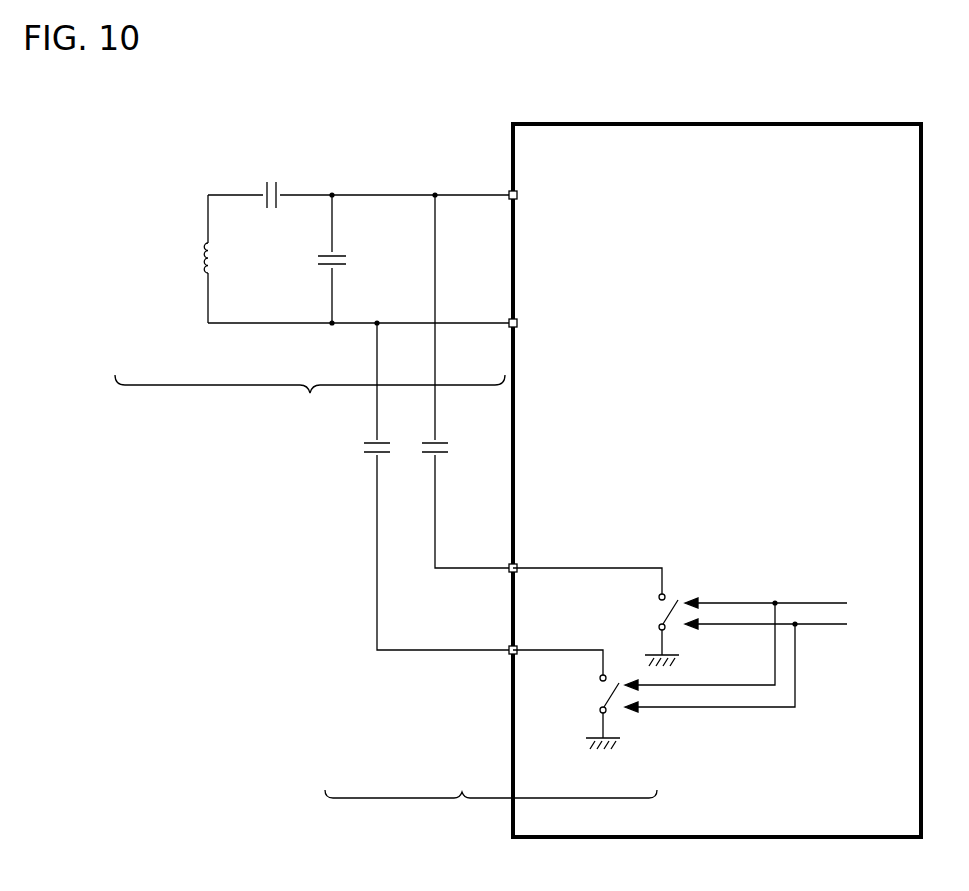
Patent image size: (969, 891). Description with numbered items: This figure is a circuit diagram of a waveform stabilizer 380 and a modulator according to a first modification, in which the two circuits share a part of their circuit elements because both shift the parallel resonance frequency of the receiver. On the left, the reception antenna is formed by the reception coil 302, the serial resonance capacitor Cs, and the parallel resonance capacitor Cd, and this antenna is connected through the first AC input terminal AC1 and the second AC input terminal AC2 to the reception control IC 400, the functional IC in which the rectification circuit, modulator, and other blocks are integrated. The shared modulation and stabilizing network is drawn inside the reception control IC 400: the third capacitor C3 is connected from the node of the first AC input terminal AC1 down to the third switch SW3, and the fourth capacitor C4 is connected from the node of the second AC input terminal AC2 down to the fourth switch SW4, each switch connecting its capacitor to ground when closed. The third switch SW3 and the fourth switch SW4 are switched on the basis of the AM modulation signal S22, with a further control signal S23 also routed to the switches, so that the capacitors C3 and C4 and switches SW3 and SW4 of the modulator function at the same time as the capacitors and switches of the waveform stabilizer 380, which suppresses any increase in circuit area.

The reception control IC 400 is at (875, 123).
The reception coil 302 is at (199, 261).
The waveform stabilizer 380 is at (491, 821).
The serial resonance capacitor Cs is at (263, 182).
The parallel resonance capacitor Cd is at (317, 263).
The third capacitor C3 is at (426, 454).
The fourth capacitor C4 is at (368, 454).
The first AC input terminal AC1 is at (509, 190).
The second AC input terminal AC2 is at (508, 330).
The third switch SW3 is at (655, 612).
The fourth switch SW4 is at (599, 696).
The AM modulation signal S22 is at (755, 641).
The control signal S23 is at (755, 662).